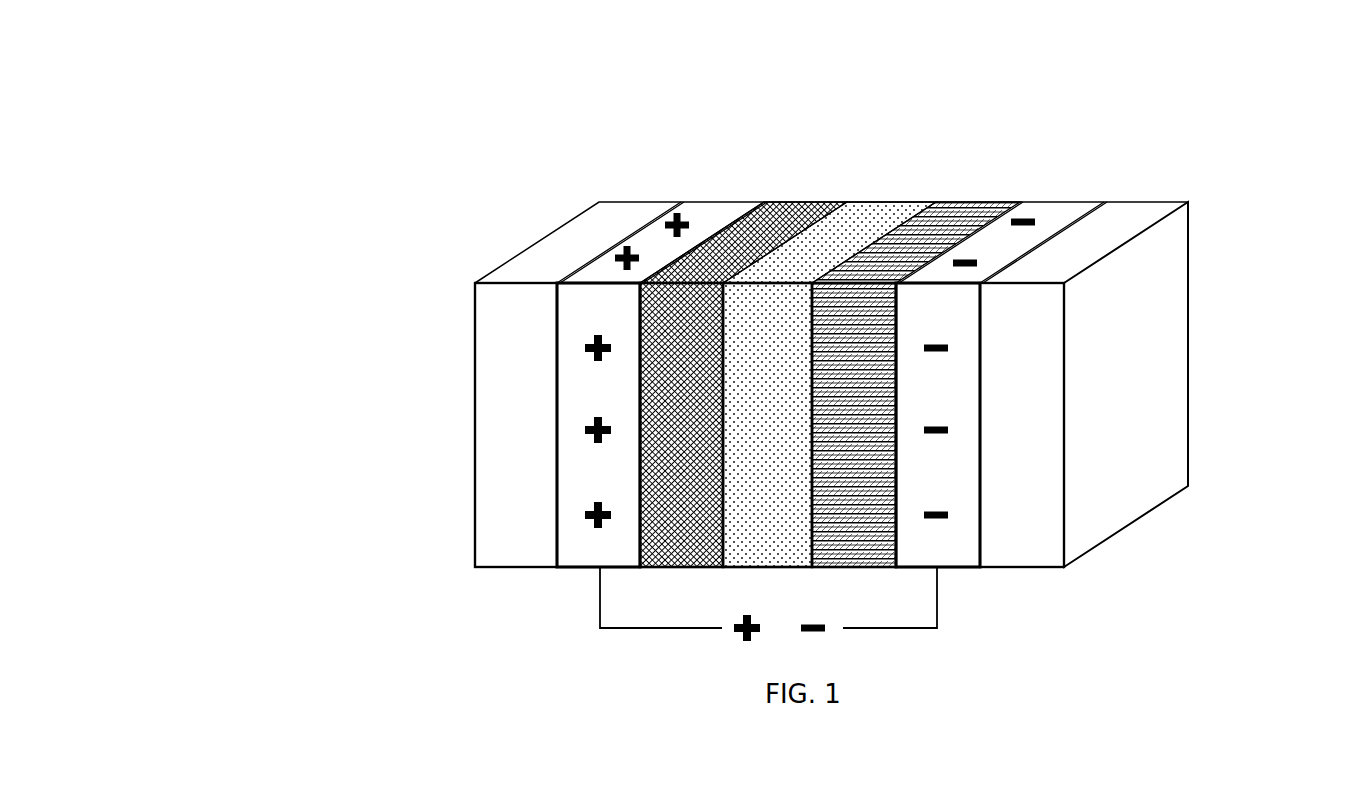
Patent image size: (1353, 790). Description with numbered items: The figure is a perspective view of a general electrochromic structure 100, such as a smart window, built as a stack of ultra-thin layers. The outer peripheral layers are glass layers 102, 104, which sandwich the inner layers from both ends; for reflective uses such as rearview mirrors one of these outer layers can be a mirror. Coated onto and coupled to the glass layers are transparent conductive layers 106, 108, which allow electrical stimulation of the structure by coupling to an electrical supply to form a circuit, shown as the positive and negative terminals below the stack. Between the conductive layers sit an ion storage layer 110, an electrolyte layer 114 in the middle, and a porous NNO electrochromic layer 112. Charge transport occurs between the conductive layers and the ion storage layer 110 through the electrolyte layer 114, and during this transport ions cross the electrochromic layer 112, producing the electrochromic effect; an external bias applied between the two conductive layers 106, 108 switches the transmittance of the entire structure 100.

The electrochromic structure 100 is at (276, 89).
The glass layer 102 is at (497, 385).
The glass layer 104 is at (1164, 385).
The conductive layer 106 is at (634, 240).
The conductive layer 108 is at (1067, 217).
The ion storage layer 110 is at (765, 222).
The electrochromic layer 112 is at (958, 214).
The electrolyte layer 114 is at (859, 217).